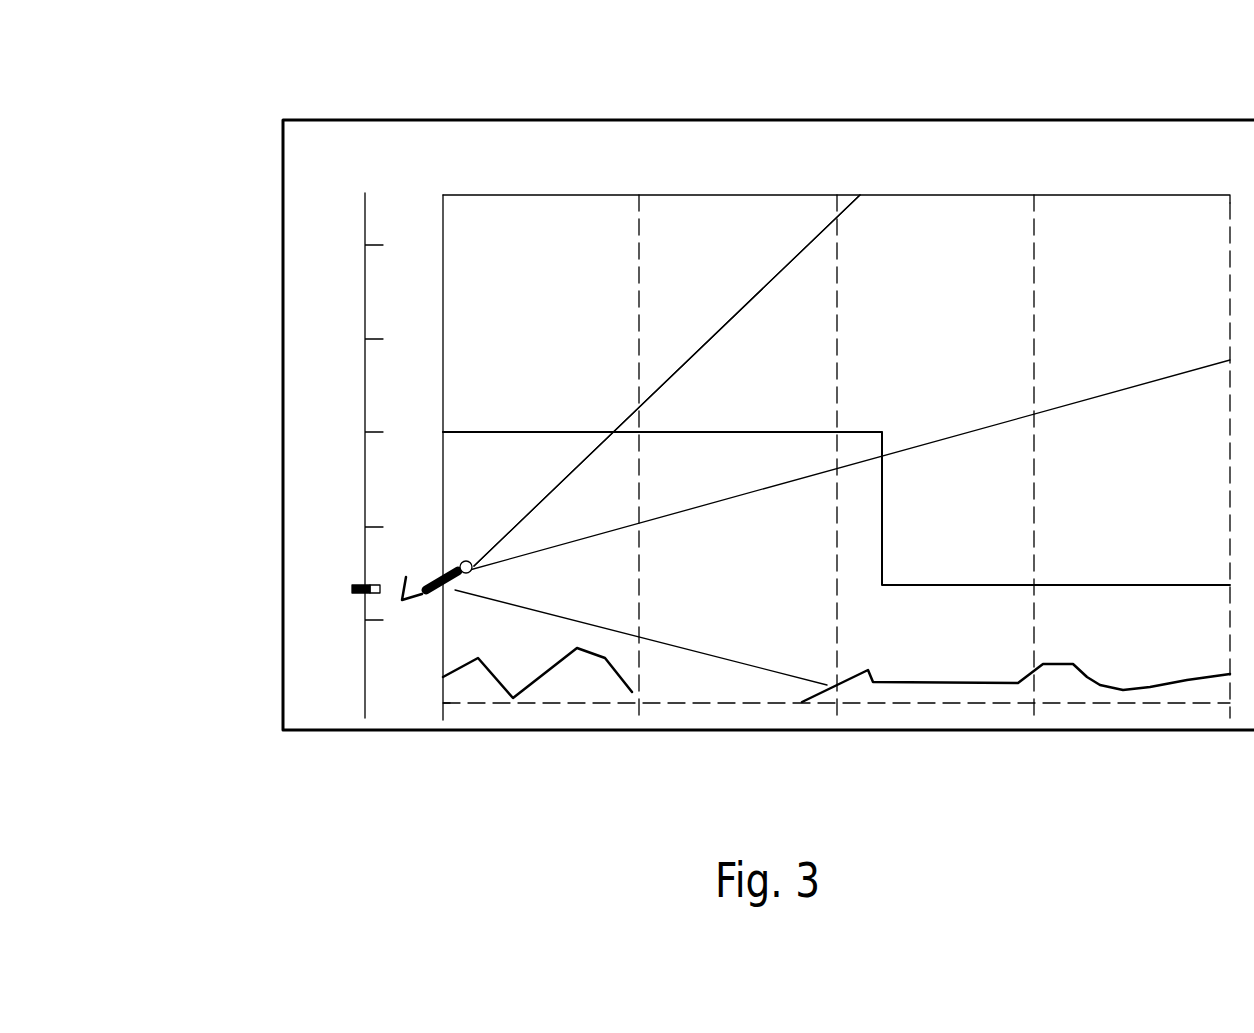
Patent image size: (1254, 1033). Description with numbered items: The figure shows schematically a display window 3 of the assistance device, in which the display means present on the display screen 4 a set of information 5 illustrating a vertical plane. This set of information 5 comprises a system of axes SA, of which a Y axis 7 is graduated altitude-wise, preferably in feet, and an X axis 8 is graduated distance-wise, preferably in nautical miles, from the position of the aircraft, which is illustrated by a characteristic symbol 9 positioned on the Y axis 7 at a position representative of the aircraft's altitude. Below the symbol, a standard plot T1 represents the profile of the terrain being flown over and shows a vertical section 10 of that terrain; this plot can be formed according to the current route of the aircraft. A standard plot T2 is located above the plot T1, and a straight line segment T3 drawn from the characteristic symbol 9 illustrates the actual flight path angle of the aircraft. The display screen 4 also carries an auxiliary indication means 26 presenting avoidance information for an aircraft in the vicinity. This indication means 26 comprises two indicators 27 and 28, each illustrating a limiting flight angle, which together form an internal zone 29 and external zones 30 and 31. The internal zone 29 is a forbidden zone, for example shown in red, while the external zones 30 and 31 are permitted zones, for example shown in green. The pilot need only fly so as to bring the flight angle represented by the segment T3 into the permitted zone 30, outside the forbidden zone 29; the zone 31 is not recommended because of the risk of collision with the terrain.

The display window 3 is at (985, 120).
The display screen 4 is at (250, 367).
The set of information 5 is at (777, 212).
The Y axis 7 is at (316, 226).
The X axis 8 is at (556, 172).
The characteristic symbol 9 is at (440, 592).
The vertical section 10 is at (535, 708).
The auxiliary indication means 26 is at (932, 400).
The indicator 27 is at (1040, 410).
The indicator 28 is at (755, 660).
The internal zone 29 is at (1114, 445).
The external zone 30 is at (688, 240).
The external zone 31 is at (473, 630).
The system of axes SA is at (396, 700).
The standard plot T1 is at (490, 666).
The standard plot T2 is at (724, 432).
The straight line segment T3 is at (632, 410).